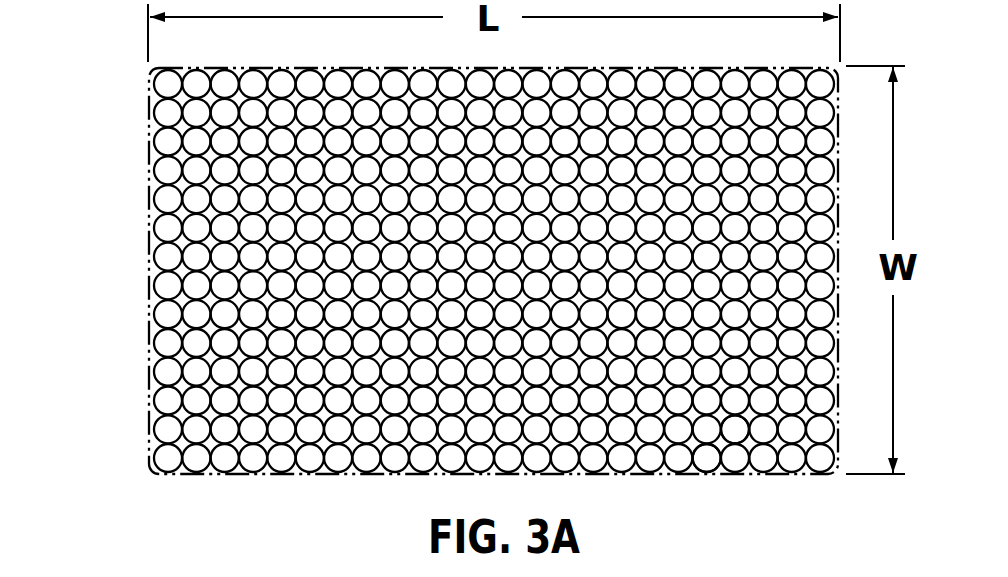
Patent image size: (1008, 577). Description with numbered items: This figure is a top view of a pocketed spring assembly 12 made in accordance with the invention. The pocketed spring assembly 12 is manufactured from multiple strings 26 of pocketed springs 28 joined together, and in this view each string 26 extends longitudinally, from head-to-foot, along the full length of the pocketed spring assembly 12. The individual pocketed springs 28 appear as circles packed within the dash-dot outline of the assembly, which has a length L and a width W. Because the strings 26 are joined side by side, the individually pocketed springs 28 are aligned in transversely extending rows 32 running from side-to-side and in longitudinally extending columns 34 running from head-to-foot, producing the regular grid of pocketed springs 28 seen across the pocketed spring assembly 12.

The pocketed spring assembly 12 is at (439, 292).
The string of pocketed springs 26 is at (140, 114).
The pocketed spring 28 is at (734, 422).
The transversely extending row 32 is at (198, 486).
The longitudinally extending column 34 is at (130, 431).